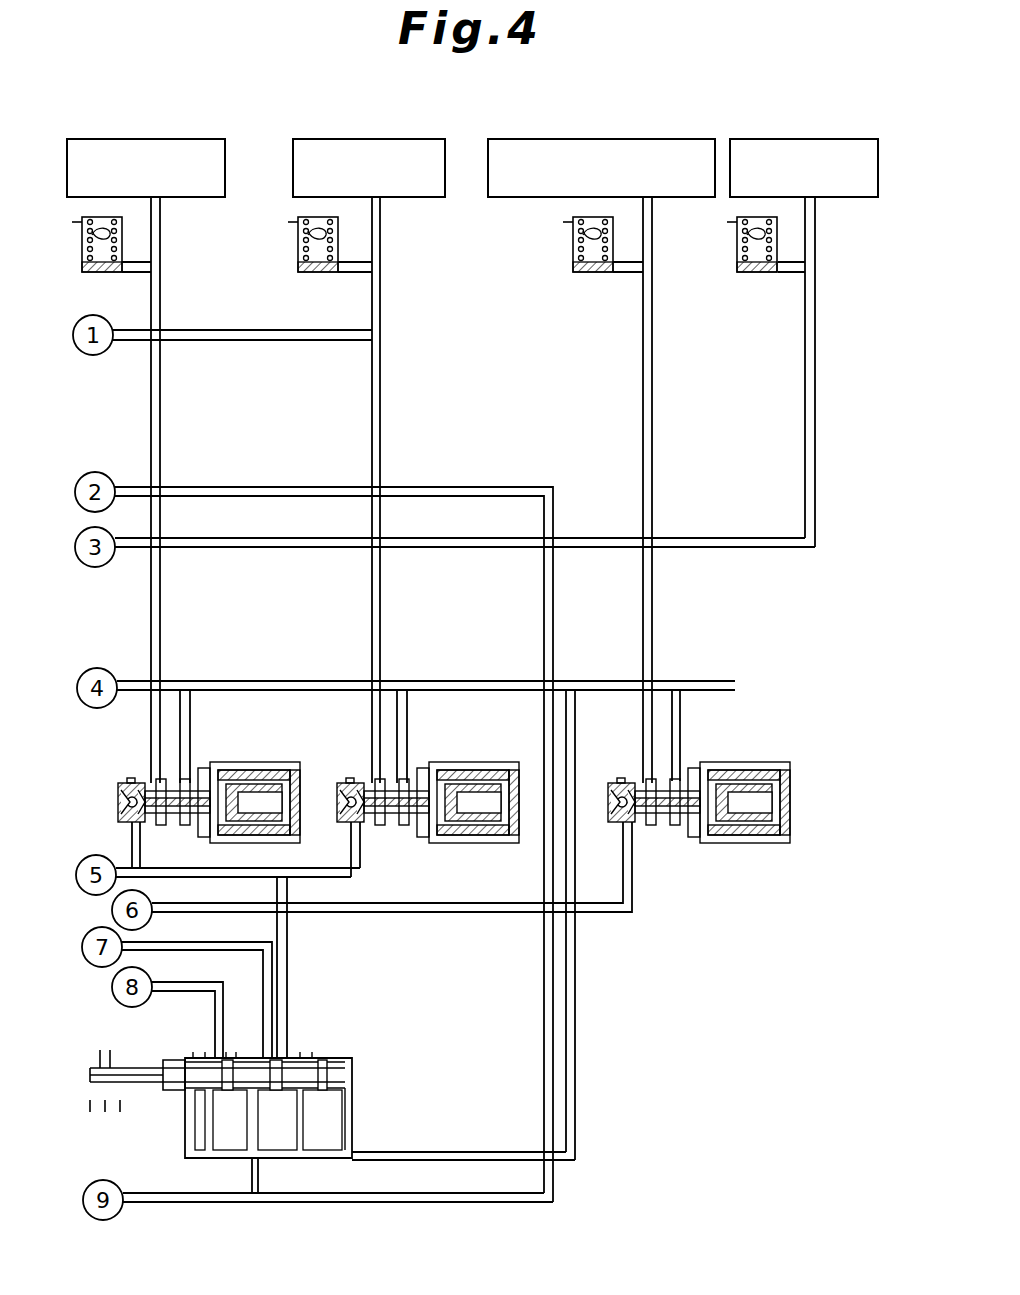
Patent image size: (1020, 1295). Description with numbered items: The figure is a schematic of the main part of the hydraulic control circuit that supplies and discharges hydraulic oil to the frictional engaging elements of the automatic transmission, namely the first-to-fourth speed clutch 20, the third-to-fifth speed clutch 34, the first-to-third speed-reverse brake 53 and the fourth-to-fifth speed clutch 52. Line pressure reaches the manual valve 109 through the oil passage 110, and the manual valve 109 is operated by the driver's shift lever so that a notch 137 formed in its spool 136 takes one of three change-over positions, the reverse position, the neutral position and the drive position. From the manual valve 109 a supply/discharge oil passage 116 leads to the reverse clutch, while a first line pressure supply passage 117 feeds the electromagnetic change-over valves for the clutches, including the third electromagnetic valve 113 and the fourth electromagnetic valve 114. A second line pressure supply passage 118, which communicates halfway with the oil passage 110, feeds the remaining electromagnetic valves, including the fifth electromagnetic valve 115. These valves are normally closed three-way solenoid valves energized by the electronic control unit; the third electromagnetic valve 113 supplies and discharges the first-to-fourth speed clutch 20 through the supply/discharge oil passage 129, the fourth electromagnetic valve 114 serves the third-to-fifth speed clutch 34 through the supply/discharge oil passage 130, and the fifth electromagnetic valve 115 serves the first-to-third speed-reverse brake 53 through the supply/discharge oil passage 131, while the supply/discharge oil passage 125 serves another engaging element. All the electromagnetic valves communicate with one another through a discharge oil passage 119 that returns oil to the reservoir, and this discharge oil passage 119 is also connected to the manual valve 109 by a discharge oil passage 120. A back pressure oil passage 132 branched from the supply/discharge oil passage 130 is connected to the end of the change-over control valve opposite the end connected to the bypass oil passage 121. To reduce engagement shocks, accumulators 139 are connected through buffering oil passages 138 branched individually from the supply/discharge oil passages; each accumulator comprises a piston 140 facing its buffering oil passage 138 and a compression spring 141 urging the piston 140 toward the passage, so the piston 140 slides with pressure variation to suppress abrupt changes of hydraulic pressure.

The 1-4 speed clutch 20 is at (153, 139).
The 3-5 speed clutch 34 is at (372, 139).
The 1-3 speed-reverse brake 53 is at (650, 139).
The 4-5 speed clutch 52 is at (800, 139).
The piston 140 is at (82, 264).
The compression spring 141 is at (82, 239).
The accumulator 139 is at (84, 285).
The buffering oil passage 138 is at (136, 273).
The supply/discharge oil passage 129 is at (160, 437).
The supply/discharge oil passage 130 is at (380, 437).
The supply/discharge oil passage 131 is at (643, 438).
The supply/discharge oil passage 125 is at (805, 434).
The back pressure oil passage 132 is at (132, 343).
The bypass oil passage 121 is at (316, 492).
The discharge oil passage 119 is at (133, 684).
The discharge oil passage 120 is at (575, 752).
The third electromagnetic change-over valve 113 is at (258, 762).
The fourth electromagnetic change-over valve 114 is at (464, 762).
The fifth electromagnetic change-over valve 115 is at (754, 760).
The first line pressure supply passage 117 is at (287, 955).
The second line pressure supply passage 118 is at (437, 912).
The supply/discharge oil passage 116 is at (190, 991).
The oil passage 110 is at (155, 1203).
The manual valve 109 is at (358, 1058).
The spool 136 is at (126, 1075).
The notch 137 is at (100, 1052).